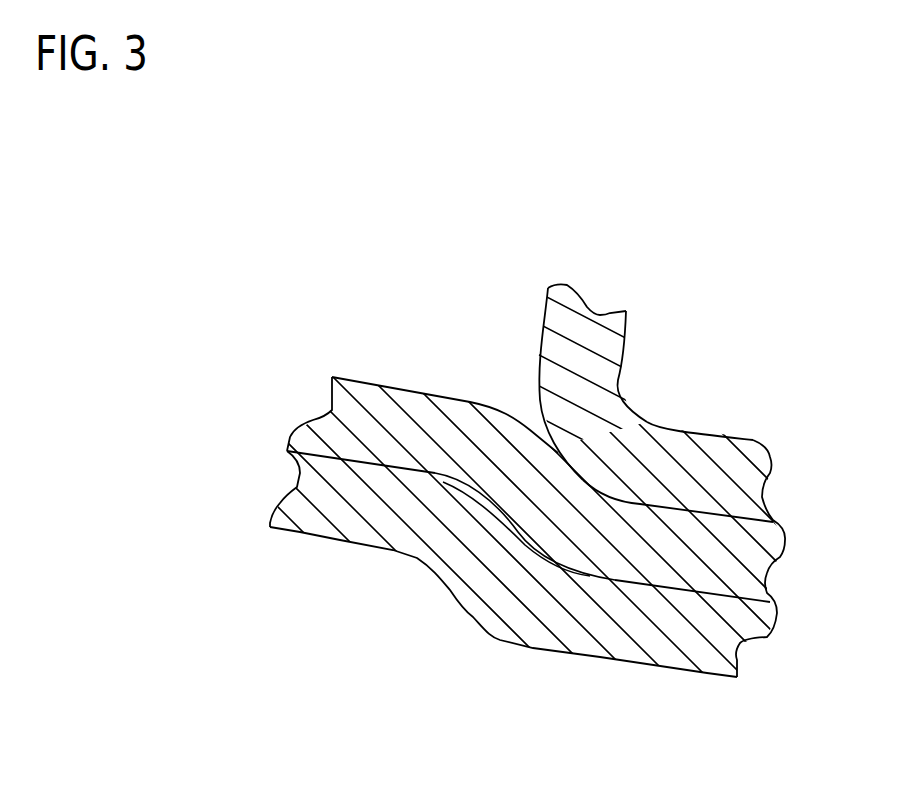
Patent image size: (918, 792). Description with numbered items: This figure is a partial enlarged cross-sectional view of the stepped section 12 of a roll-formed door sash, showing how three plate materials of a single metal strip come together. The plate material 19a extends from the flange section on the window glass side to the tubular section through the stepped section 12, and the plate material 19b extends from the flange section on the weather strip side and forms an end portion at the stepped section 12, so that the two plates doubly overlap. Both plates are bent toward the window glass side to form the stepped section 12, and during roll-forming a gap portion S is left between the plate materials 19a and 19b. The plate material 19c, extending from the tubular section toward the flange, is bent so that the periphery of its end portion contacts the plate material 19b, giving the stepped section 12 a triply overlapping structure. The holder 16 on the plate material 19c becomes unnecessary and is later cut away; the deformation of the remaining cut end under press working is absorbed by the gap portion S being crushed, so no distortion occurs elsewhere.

The stepped section 12 is at (557, 637).
The holder 16 is at (575, 287).
The plate material 19a is at (333, 498).
The plate material 19b is at (378, 397).
The plate material 19c is at (730, 452).
The gap portion S is at (513, 535).